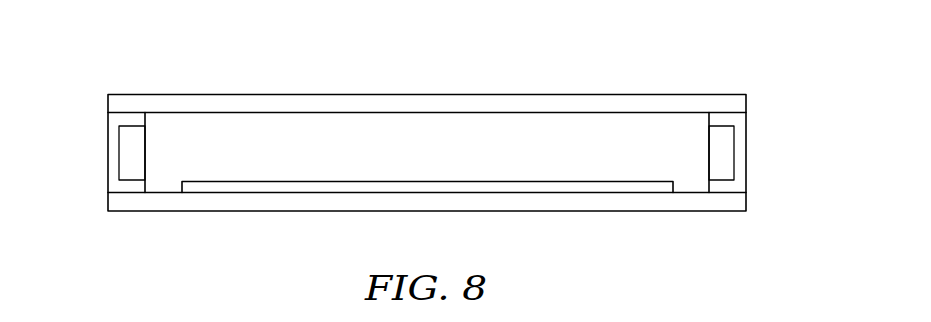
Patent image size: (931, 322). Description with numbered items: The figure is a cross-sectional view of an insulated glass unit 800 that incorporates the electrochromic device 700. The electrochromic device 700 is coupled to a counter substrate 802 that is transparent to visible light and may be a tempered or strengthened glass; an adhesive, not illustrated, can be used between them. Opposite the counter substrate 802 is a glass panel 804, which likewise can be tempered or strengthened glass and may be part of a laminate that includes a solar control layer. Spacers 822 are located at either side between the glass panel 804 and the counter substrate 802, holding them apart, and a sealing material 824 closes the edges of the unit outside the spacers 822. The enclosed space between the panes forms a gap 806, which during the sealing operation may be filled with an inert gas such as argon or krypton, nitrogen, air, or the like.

The insulated glass unit 800 is at (742, 54).
The counter substrate 802 is at (230, 200).
The glass panel 804 is at (249, 105).
The gap 806 is at (357, 154).
The spacers 822 is at (135, 161).
The sealing material 824 is at (113, 155).
The electrochromic device 700 is at (467, 188).